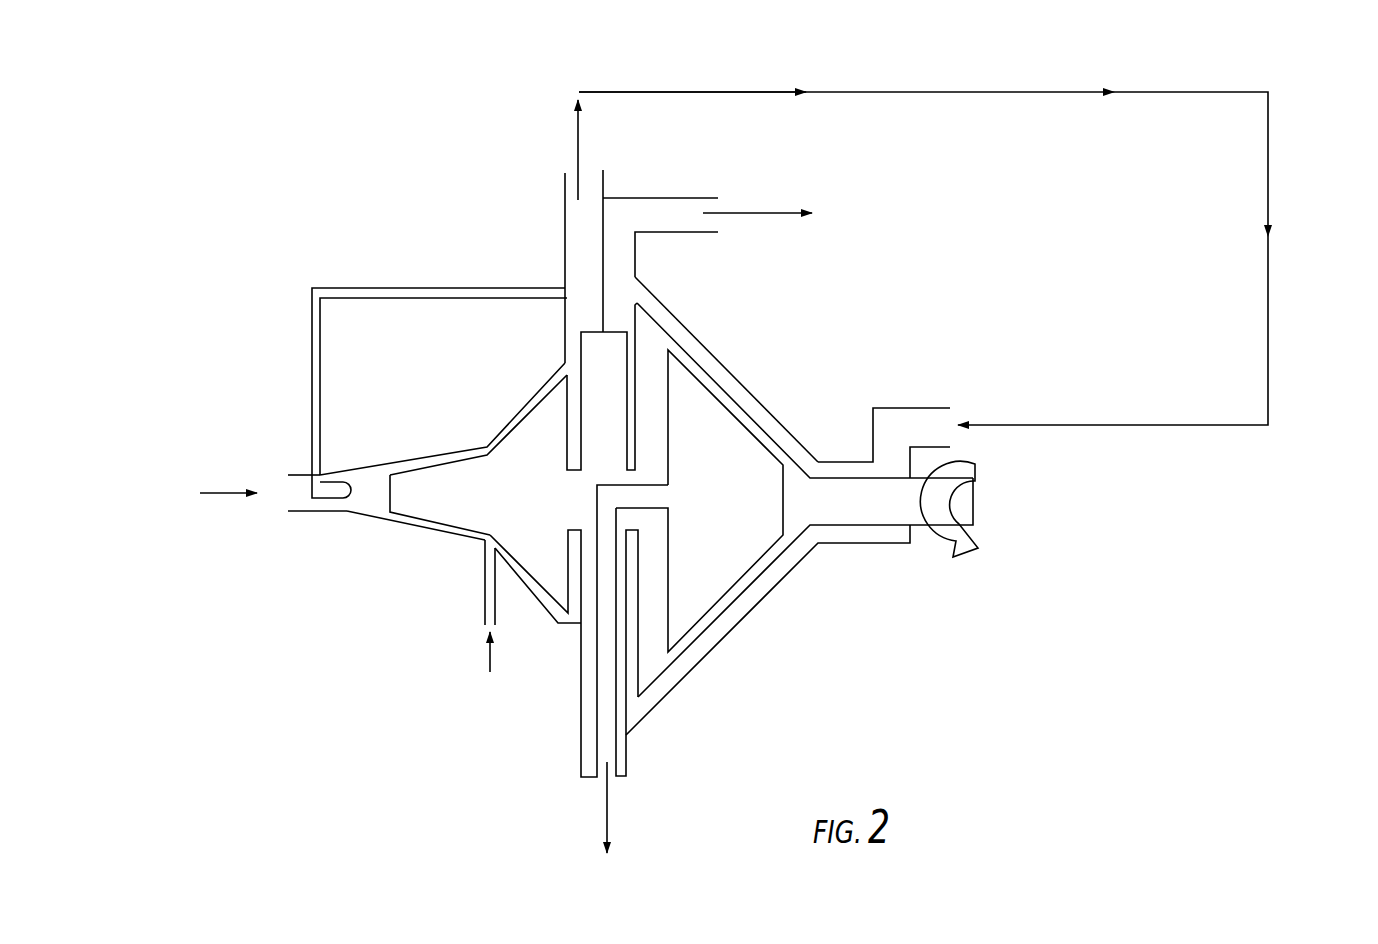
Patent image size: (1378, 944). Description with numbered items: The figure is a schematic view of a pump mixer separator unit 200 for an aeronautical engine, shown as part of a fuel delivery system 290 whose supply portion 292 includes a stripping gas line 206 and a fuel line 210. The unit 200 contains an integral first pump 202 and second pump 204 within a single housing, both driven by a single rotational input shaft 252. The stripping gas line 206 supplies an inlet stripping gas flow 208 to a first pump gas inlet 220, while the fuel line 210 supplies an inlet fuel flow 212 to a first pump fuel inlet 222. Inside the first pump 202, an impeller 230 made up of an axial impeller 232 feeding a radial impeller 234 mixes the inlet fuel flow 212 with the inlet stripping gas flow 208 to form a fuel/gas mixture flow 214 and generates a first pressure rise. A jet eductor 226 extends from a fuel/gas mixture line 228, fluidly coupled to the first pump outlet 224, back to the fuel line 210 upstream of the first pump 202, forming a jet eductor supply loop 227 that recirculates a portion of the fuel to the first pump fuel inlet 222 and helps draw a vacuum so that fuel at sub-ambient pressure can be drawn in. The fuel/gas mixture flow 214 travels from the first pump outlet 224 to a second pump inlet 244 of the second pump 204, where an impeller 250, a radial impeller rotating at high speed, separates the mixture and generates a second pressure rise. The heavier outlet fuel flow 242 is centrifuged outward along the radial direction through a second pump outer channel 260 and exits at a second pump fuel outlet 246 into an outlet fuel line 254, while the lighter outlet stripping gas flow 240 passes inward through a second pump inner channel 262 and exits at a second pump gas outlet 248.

The pump mixer separator unit 200 is at (797, 657).
The first pump 202 is at (515, 450).
The second pump 204 is at (738, 580).
The stripping gas line 206 is at (421, 664).
The inlet stripping gas flow 208 is at (490, 660).
The fuel line 210 is at (210, 456).
The inlet fuel flow 212 is at (228, 490).
The fuel/gas mixture flow 214 is at (578, 153).
The first pump gas inlet 220 is at (484, 590).
The first pump fuel inlet 222 is at (305, 512).
The first pump outlet 224 is at (565, 206).
The jet eductor 226 is at (310, 328).
The jet eductor supply loop 227 is at (348, 266).
The fuel/gas mixture line 228 is at (615, 88).
The impeller 230 is at (470, 450).
The axial impeller 232 is at (430, 503).
The radial impeller 234 is at (545, 560).
The outlet stripping gas flow 240 is at (610, 808).
The outlet fuel flow 242 is at (789, 241).
The second pump inlet 244 is at (925, 408).
The second pump fuel outlet 246 is at (693, 198).
The second pump gas outlet 248 is at (627, 762).
The impeller 250 is at (710, 440).
The rotational input shaft 252 is at (978, 505).
The outlet fuel line 254 is at (770, 217).
The second pump outer channel 260 is at (700, 342).
The second pump inner channel 262 is at (658, 507).
The fuel delivery system 290 is at (224, 122).
The supply portion 292 is at (294, 656).